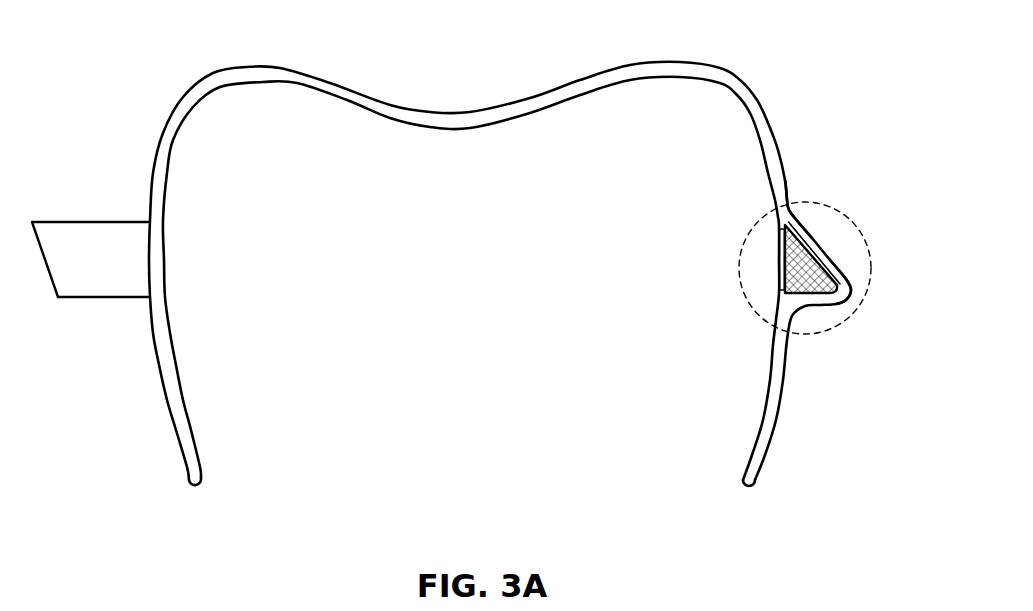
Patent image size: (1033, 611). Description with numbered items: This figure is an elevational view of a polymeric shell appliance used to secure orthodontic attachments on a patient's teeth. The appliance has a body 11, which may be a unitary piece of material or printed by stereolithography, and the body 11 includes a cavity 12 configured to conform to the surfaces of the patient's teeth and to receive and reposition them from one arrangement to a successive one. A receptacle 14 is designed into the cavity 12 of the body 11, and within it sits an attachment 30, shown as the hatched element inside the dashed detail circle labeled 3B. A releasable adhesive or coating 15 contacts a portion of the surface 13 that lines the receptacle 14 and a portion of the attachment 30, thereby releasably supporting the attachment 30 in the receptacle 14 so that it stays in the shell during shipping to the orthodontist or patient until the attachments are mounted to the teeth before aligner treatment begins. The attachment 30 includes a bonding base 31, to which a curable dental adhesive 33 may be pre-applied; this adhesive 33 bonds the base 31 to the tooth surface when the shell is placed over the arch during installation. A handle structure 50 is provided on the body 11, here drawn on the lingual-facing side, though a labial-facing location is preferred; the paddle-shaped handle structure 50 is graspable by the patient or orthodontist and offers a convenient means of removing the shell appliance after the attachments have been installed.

The body 11 is at (222, 70).
The cavity 12 is at (483, 352).
The surface 13 is at (848, 285).
The receptacle 14 is at (820, 232).
The releasable adhesive or coating 15 is at (834, 262).
The attachment 30 is at (808, 280).
The bonding base 31 is at (777, 253).
The curable dental adhesive 33 is at (780, 273).
The handle structure 50 is at (105, 297).
The detail view callout circle 3B is at (851, 219).